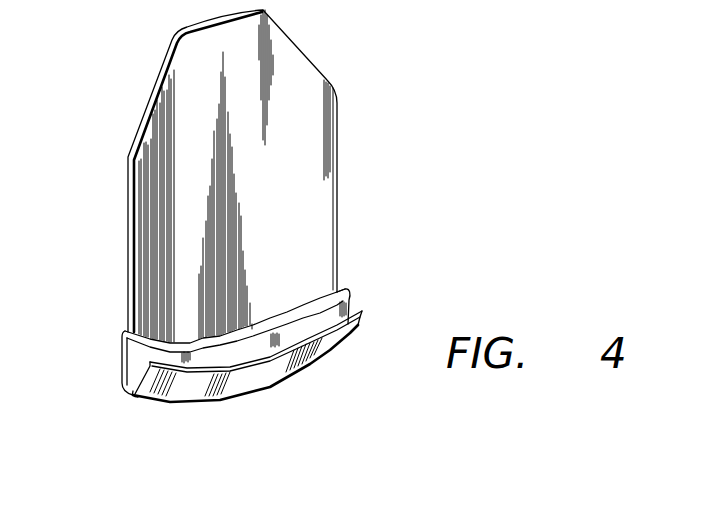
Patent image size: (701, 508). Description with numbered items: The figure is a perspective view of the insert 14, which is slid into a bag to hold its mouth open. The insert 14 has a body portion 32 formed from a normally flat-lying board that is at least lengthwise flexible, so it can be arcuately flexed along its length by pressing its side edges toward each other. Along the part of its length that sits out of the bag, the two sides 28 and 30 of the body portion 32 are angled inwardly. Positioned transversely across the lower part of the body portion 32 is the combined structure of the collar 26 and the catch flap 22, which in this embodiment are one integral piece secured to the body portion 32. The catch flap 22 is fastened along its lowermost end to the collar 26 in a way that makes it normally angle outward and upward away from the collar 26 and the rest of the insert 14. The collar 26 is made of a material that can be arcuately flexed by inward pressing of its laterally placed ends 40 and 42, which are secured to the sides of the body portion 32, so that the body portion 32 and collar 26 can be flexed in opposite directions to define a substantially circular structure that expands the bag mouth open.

The insert 14 is at (352, 107).
The catch flap 22 is at (323, 350).
The collar 26 is at (322, 320).
The side of insert body portion 28 is at (160, 236).
The side of insert body portion 30 is at (337, 175).
The body portion 32 is at (250, 131).
The end of collar 40 is at (120, 354).
The end of collar 42 is at (343, 289).